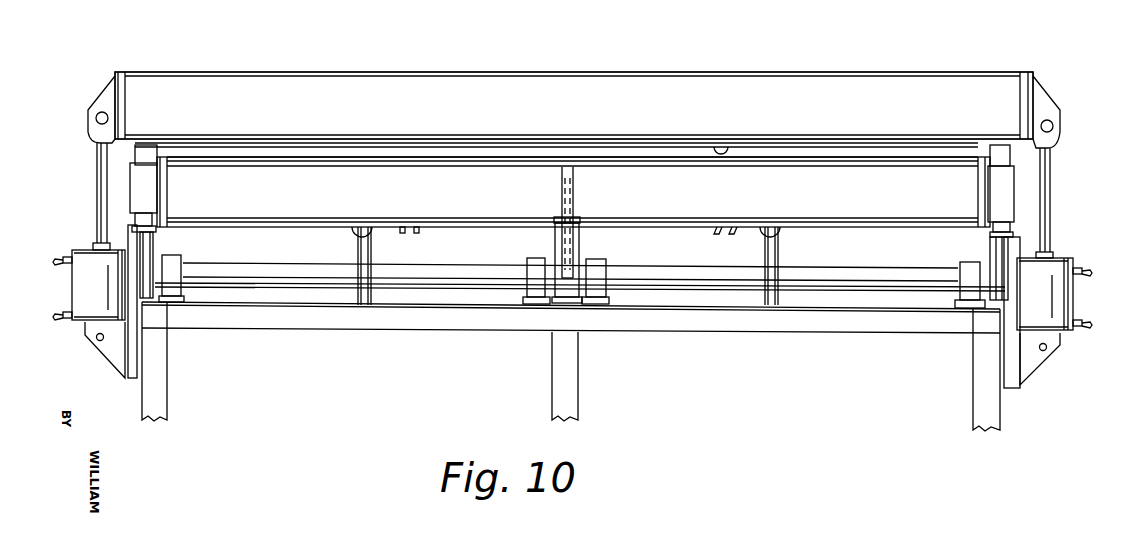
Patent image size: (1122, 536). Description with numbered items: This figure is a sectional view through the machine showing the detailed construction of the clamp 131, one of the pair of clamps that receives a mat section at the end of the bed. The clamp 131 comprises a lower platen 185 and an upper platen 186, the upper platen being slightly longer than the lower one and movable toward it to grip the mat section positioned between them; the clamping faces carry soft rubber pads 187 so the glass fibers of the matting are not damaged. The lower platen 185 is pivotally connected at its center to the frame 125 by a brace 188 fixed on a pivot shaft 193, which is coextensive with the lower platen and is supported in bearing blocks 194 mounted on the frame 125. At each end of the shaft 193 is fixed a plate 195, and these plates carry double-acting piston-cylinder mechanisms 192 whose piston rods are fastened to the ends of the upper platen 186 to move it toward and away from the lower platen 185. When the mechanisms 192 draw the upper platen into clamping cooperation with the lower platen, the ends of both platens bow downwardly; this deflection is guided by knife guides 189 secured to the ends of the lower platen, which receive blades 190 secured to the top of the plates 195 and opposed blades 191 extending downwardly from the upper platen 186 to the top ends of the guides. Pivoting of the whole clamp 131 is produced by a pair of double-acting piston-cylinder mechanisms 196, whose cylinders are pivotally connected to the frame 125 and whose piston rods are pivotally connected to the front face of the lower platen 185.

The frame 125 is at (545, 338).
The clamp 131 is at (450, 61).
The lower platen 185 is at (315, 210).
The upper platen 186 is at (303, 88).
The soft rubber pad 187 is at (728, 150).
The brace 188 is at (557, 240).
The knife guide 189 is at (148, 190).
The blade 190 is at (143, 223).
The opposed blade 191 is at (138, 152).
The double-acting piston-cylinder mechanism 192 is at (90, 260).
The pivot shaft 193 is at (455, 272).
The bearing block 194 is at (175, 262).
The plate 195 is at (145, 246).
The double-acting piston-cylinder mechanism 196 is at (358, 230).